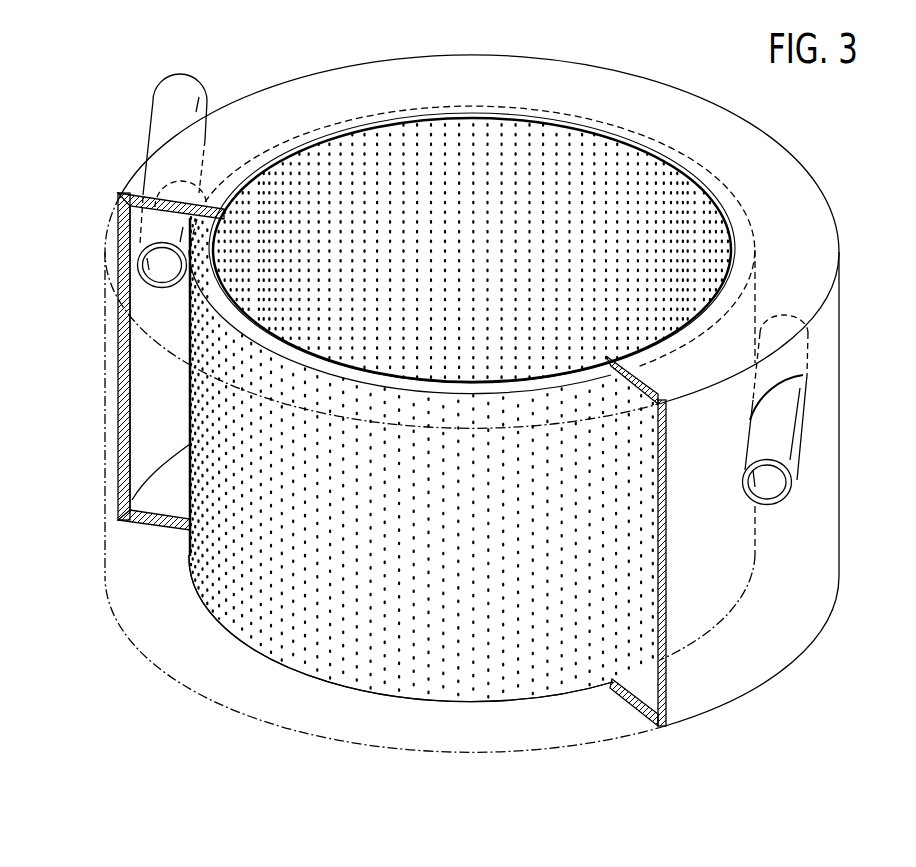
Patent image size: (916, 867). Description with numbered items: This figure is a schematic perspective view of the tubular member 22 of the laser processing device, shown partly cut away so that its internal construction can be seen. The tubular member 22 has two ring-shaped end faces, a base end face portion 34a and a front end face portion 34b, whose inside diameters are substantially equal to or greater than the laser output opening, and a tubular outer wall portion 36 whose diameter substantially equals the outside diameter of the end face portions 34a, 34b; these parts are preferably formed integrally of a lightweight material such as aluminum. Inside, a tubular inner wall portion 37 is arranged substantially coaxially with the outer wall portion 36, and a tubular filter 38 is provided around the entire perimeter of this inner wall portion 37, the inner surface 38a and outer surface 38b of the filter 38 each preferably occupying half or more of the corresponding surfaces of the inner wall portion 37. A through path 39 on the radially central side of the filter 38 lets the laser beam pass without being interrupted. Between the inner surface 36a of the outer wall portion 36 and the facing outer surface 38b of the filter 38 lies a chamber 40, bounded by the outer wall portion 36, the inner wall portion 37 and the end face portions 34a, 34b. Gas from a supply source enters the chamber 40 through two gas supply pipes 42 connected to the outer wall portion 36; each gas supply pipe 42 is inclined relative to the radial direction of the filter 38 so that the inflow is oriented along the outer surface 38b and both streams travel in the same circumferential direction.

The tubular member 22 is at (807, 145).
The base end face portion 34a is at (262, 105).
The front end face portion 34b is at (172, 502).
The outer wall portion 36 is at (118, 383).
The inner surface of the outer wall portion 36a is at (134, 358).
The inner wall portion 37 is at (369, 701).
The filter 38 is at (597, 688).
The inner surface of the filter 38a is at (602, 157).
The outer surface of the filter 38b is at (301, 641).
The through path 39 is at (359, 178).
The chamber 40 is at (163, 405).
The gas supply pipe 42 is at (160, 103).